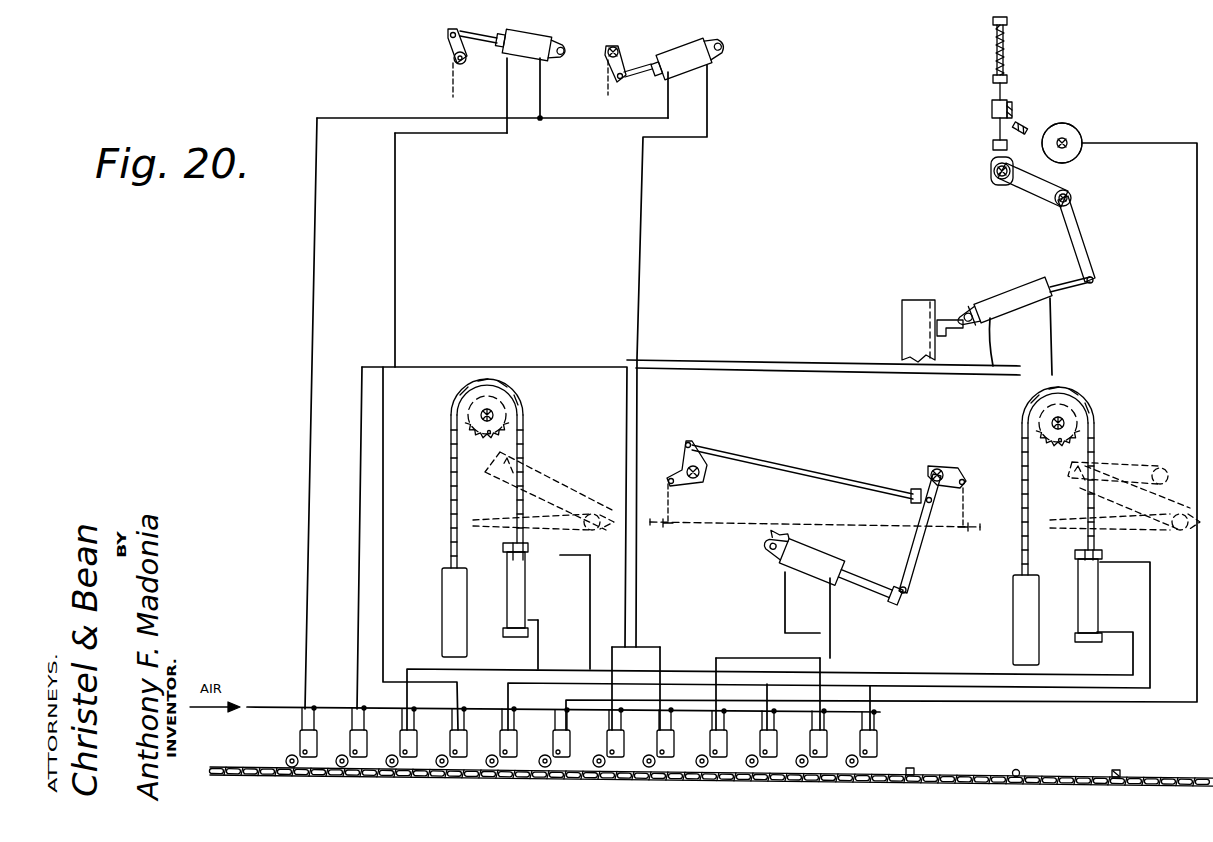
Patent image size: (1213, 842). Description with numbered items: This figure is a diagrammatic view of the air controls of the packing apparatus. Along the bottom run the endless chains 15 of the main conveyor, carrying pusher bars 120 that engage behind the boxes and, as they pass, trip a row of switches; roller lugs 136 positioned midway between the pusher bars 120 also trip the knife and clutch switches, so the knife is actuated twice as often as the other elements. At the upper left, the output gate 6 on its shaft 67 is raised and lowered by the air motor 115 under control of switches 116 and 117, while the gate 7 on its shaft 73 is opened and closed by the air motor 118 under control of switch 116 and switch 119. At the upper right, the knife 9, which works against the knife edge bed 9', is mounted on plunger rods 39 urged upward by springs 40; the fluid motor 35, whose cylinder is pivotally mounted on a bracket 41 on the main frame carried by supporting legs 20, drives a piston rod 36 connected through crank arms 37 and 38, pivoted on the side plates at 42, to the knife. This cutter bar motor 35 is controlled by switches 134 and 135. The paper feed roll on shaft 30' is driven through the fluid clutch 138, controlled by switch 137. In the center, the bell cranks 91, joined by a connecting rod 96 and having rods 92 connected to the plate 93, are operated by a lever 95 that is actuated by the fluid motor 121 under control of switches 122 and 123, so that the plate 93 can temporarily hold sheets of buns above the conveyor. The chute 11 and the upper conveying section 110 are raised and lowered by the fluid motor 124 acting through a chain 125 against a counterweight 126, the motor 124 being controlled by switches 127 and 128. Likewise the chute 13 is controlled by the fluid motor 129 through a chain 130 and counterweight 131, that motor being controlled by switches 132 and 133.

The air motor 115 is at (548, 25).
The air motor 118 is at (684, 45).
The shaft 73 is at (616, 46).
The shaft 67 is at (468, 63).
The output gate 6 is at (448, 84).
The gate 7 is at (604, 85).
The springs 40 is at (1007, 33).
The plunger rods 39 is at (992, 133).
The knife 9 is at (1022, 100).
The knife edge bed 9' is at (1038, 112).
The shaft 30' is at (1079, 132).
The fluid clutch 138 is at (1072, 160).
The crank arm 38 is at (1043, 193).
The pivot 42 is at (1072, 198).
The crank arm 37 is at (1092, 240).
The piston rod 36 is at (1068, 297).
The fluid motor 35 is at (1000, 296).
The supporting legs 20 is at (915, 300).
The bracket 41 is at (947, 329).
The chain 130 is at (522, 428).
The chute 13 is at (545, 533).
The counterweight 131 is at (448, 582).
The fluid motor 129 is at (530, 577).
The bell cranks 91 is at (683, 465).
The connecting rod 96 is at (780, 462).
The rod 92 is at (672, 503).
The plate 93 is at (880, 522).
The lever 95 is at (917, 562).
The fluid motor 121 is at (830, 558).
The chain 125 is at (1094, 427).
The upper conveying section 110 is at (1138, 470).
The chute 11 is at (1143, 537).
The fluid motor 124 is at (1098, 578).
The counterweight 126 is at (1022, 612).
The switch 116 is at (300, 740).
The switch 134 is at (350, 740).
The switch 127 is at (400, 740).
The switch 117 is at (450, 740).
The switch 132 is at (500, 740).
The switch 137 is at (570, 742).
The switch 135 is at (620, 742).
The switch 119 is at (671, 742).
The switch 122 is at (724, 742).
The switch 133 is at (774, 742).
The switch 123 is at (824, 742).
The switch 128 is at (877, 745).
The pusher bars 120 is at (915, 768).
The roller lugs 136 is at (1017, 769).
The endless chains 15 is at (1147, 788).